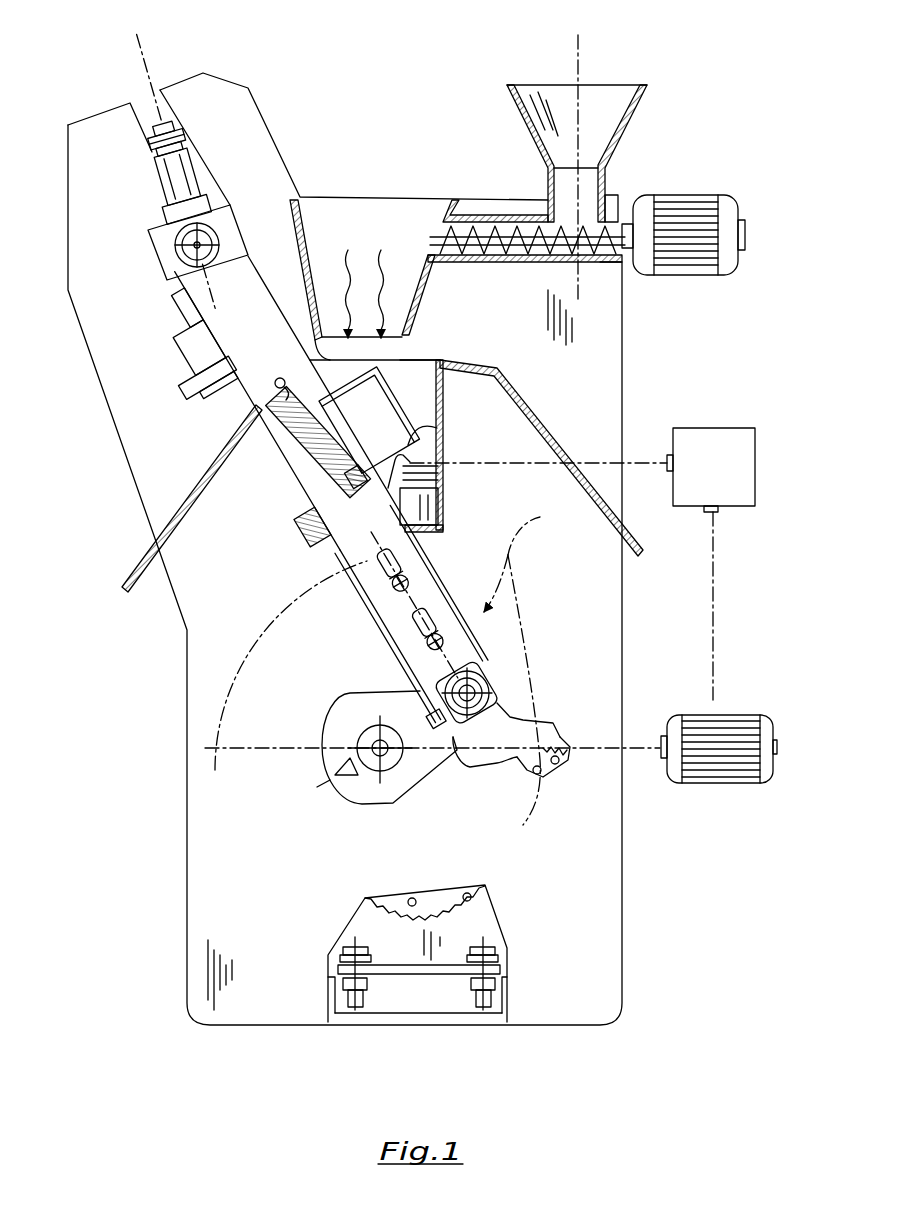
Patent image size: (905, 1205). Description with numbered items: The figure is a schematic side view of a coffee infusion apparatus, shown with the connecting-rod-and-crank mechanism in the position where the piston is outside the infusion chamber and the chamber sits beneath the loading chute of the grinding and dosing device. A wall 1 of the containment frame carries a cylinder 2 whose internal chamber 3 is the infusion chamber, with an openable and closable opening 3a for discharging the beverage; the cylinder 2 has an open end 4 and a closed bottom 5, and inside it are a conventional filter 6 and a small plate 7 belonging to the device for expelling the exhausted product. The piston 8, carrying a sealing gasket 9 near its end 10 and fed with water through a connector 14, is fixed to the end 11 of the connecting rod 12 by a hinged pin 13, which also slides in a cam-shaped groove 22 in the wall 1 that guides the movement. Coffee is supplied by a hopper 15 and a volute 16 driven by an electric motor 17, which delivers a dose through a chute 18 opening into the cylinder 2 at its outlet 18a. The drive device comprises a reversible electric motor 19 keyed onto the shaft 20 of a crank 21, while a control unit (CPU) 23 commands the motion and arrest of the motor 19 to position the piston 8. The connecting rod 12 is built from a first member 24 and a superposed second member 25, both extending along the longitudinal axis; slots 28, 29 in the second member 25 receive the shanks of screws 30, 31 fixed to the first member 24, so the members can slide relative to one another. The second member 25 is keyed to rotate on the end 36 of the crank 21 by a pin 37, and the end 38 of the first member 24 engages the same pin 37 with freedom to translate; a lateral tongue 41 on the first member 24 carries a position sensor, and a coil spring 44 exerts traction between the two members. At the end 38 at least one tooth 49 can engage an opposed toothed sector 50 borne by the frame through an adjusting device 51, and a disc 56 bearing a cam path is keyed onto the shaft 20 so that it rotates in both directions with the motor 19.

The wall of the containment frame 1 is at (78, 152).
The cylinder 2 is at (445, 372).
The infusion chamber 3 is at (418, 410).
The opening 3a is at (300, 534).
The open end 4 is at (412, 366).
The closed bottom 5 is at (423, 537).
The filter 6 is at (447, 472).
The small plate 7 is at (441, 502).
The piston 8 is at (178, 303).
The sealing gasket 9 is at (192, 388).
The end of the piston 10 is at (192, 396).
The end of the connecting rod 11 is at (200, 277).
The connecting rod 12 is at (262, 470).
The pin 13 is at (204, 241).
The connector 14 is at (170, 133).
The hopper 15 is at (600, 97).
The volute 16 is at (527, 219).
The electric motor 17 is at (690, 205).
The chute 18 is at (383, 214).
The chute outlet 18a is at (296, 292).
The electric motor 19 is at (738, 726).
The shaft of the crank 20 is at (357, 738).
The crank 21 is at (407, 770).
The groove 22 is at (142, 100).
The control unit (CPU) 23 is at (728, 436).
The first member 24 is at (264, 355).
The second member 25 is at (488, 615).
The longitudinal slot 28 is at (388, 554).
The longitudinal slot 29 is at (420, 616).
The screw 30 is at (394, 586).
The screw 31 is at (408, 670).
The end of the crank 36 is at (495, 728).
The pin 37 is at (478, 666).
The end of the first member 38 is at (527, 722).
The lateral tongue 41 is at (417, 426).
The spring 44 is at (298, 456).
The tooth 49 is at (556, 742).
The toothed sector 50 is at (488, 890).
The adjusting device 51 is at (510, 946).
The disc 56 is at (540, 517).